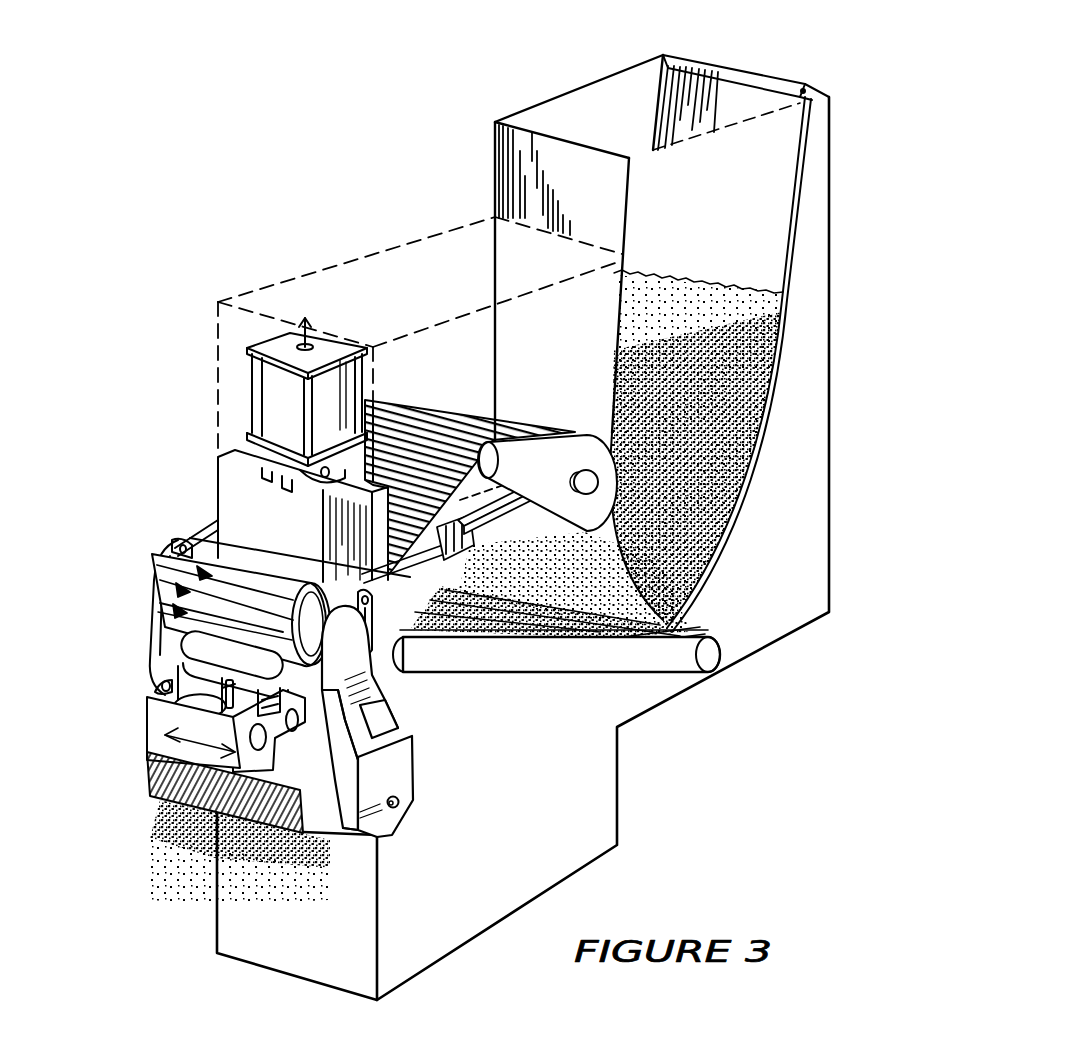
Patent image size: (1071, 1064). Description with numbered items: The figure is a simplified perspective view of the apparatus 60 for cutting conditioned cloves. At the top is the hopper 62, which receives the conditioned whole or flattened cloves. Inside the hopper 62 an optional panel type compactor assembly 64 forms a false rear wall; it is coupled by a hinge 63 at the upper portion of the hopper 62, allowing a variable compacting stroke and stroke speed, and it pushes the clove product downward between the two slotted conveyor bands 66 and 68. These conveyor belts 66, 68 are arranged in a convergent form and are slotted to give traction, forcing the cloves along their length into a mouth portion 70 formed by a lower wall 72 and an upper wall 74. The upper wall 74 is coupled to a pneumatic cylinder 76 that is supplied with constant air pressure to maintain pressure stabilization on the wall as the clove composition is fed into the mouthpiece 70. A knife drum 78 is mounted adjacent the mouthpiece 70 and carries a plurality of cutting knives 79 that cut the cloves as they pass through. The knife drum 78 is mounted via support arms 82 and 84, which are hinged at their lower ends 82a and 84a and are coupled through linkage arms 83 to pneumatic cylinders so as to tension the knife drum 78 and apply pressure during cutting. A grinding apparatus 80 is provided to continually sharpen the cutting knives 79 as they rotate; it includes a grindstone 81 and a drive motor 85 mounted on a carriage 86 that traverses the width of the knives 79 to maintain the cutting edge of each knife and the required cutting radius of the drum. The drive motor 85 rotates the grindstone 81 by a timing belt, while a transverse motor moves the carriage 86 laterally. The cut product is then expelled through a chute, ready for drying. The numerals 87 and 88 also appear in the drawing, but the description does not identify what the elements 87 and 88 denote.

The apparatus 60 is at (193, 228).
The hopper 62 is at (590, 108).
The hinge 63 is at (808, 89).
The panel type compactor assembly 64 is at (765, 450).
The slotted conveyor band 66 is at (690, 627).
The slotted conveyor band 68 is at (538, 422).
The mouth portion 70 is at (383, 640).
The lower wall 72 is at (385, 655).
The upper wall 74 is at (232, 480).
The pneumatic cylinder 76 is at (270, 379).
The knife drum 78 is at (160, 602).
The cutting knives 79 is at (178, 587).
The grinding apparatus 80 is at (180, 663).
The grindstone 81 is at (177, 673).
The support arm 82 is at (393, 757).
The lower end of support arm 82a is at (397, 803).
The linkage arms 83 is at (440, 578).
The support arm 84 is at (158, 620).
The lower end of support arm 84a is at (150, 690).
The drive motor 85 is at (287, 708).
The carriage 86 is at (157, 722).
The brush 87 is at (160, 773).
The adjusting rod 88 is at (506, 500).